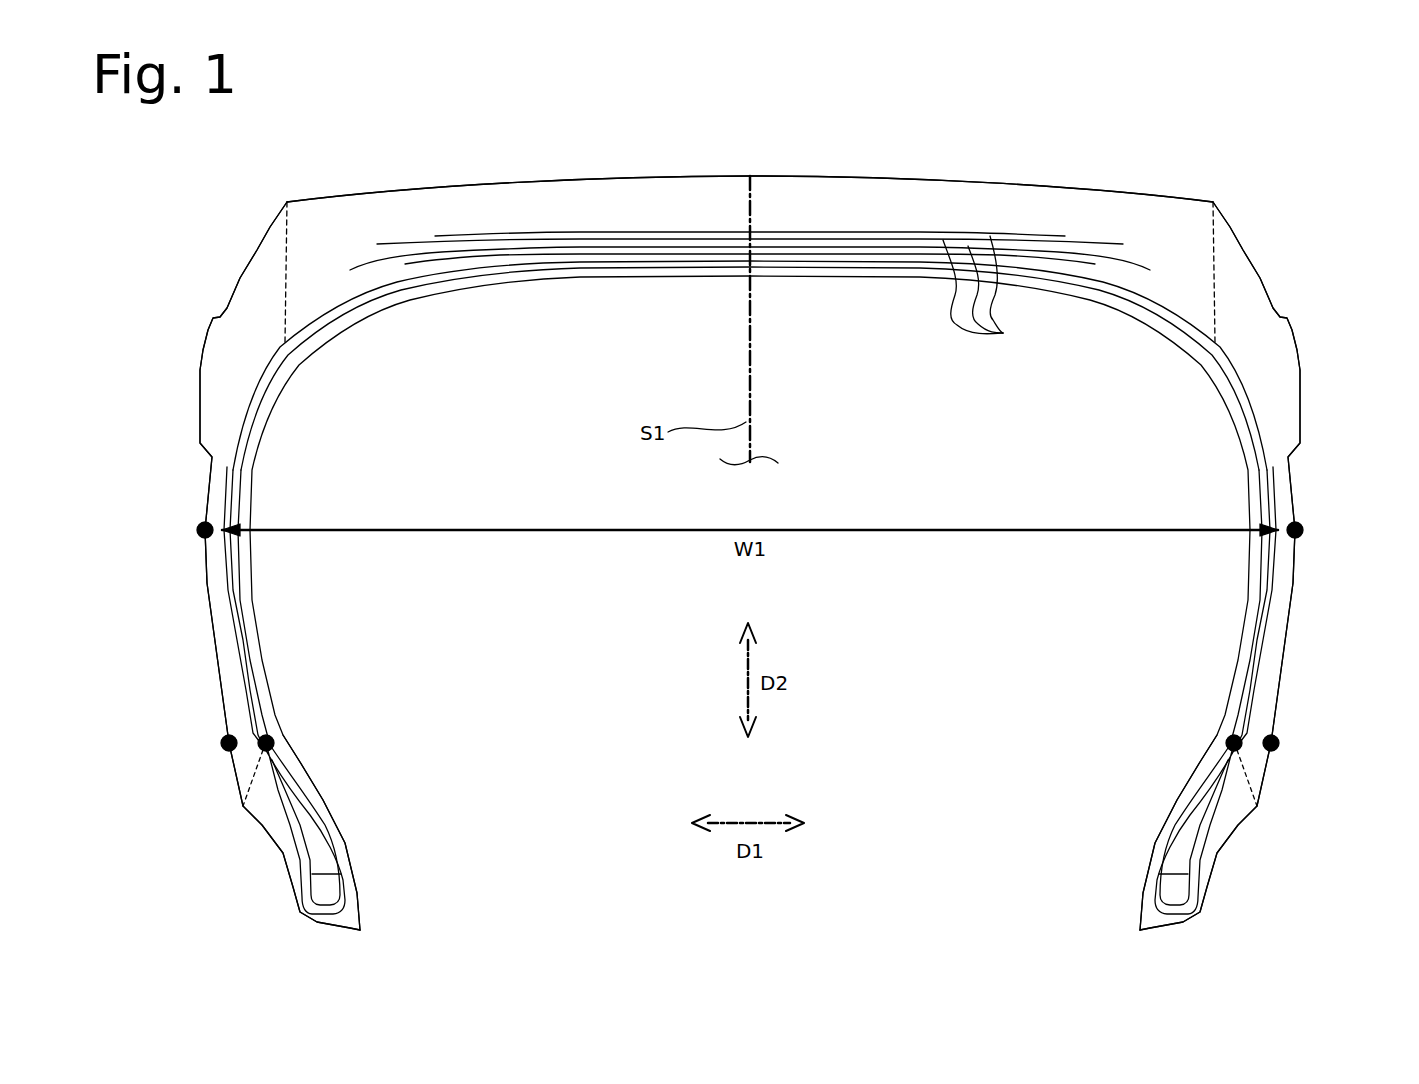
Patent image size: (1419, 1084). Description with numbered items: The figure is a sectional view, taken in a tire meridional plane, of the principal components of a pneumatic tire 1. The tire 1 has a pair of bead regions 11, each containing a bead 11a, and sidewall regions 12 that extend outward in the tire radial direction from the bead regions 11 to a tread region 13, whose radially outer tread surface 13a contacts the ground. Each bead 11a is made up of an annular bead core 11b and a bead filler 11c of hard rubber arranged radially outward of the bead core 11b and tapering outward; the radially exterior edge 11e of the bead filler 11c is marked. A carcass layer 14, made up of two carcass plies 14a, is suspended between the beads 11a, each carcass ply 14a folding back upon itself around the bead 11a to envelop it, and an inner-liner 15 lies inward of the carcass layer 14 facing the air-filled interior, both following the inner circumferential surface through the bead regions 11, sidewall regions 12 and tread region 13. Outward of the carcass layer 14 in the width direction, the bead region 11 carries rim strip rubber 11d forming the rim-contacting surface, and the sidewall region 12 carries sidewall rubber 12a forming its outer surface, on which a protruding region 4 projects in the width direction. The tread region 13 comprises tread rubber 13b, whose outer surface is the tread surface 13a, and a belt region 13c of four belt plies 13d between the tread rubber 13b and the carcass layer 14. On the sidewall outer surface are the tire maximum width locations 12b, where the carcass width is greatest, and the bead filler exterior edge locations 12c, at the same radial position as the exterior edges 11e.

The pneumatic tire 1 is at (1318, 102).
The protruding region 4 is at (193, 340).
The bead region 11 is at (251, 911).
The bead 11a is at (457, 858).
The bead core 11b is at (335, 887).
The bead filler 11c is at (313, 828).
The rim strip rubber 11d is at (285, 833).
The exterior edge of bead filler 11e is at (272, 740).
The sidewall region 12 is at (176, 494).
The sidewall rubber 12a is at (215, 578).
The tire maximum width location 12b is at (200, 530).
The bead filler exterior edge location 12c is at (224, 744).
The tread region 13 is at (810, 149).
The tread surface 13a is at (540, 176).
The tread rubber 13b is at (672, 200).
The belt region 13c is at (956, 229).
The belt ply 13d is at (995, 327).
The carcass layer 14 is at (606, 274).
The carcass ply 14a is at (333, 333).
The inner-liner 15 is at (828, 283).